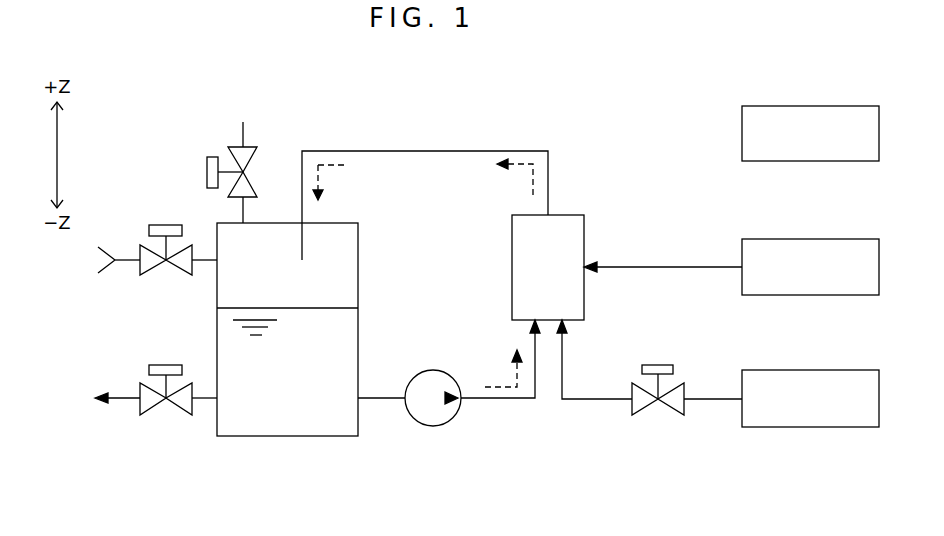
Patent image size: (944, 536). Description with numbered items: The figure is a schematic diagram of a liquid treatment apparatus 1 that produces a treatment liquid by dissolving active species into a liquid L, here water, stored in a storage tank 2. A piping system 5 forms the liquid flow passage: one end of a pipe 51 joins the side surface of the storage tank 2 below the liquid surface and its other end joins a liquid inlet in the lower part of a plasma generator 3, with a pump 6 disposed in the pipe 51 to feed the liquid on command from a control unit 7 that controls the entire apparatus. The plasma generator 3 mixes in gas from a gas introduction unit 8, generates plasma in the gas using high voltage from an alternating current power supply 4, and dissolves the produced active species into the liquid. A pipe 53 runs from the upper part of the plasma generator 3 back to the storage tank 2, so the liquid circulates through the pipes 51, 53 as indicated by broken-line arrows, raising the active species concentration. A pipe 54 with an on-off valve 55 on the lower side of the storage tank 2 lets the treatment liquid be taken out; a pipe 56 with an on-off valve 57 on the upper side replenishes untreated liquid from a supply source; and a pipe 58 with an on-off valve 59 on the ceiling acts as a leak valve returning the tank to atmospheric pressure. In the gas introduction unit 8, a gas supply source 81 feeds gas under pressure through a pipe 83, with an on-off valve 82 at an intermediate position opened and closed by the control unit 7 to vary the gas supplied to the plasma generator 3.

The liquid treatment apparatus 1 is at (604, 107).
The storage tank 2 is at (290, 436).
The plasma generator 3 is at (584, 232).
The alternating current power supply 4 is at (833, 295).
The piping system 5 is at (178, 181).
The pump 6 is at (433, 426).
The control unit 7 is at (833, 161).
The gas introduction unit 8 is at (575, 488).
The pipe 51 is at (495, 400).
The pipe 53 is at (430, 151).
The pipe 54 is at (205, 402).
The on-off valve 55 is at (166, 402).
The pipe 56 is at (205, 262).
The on-off valve 57 is at (166, 264).
The pipe 58 is at (247, 213).
The on-off valve 59 is at (253, 158).
The gas supply source 81 is at (798, 427).
The on-off valve 82 is at (672, 412).
The pipe 83 is at (600, 402).
The liquid L is at (342, 337).